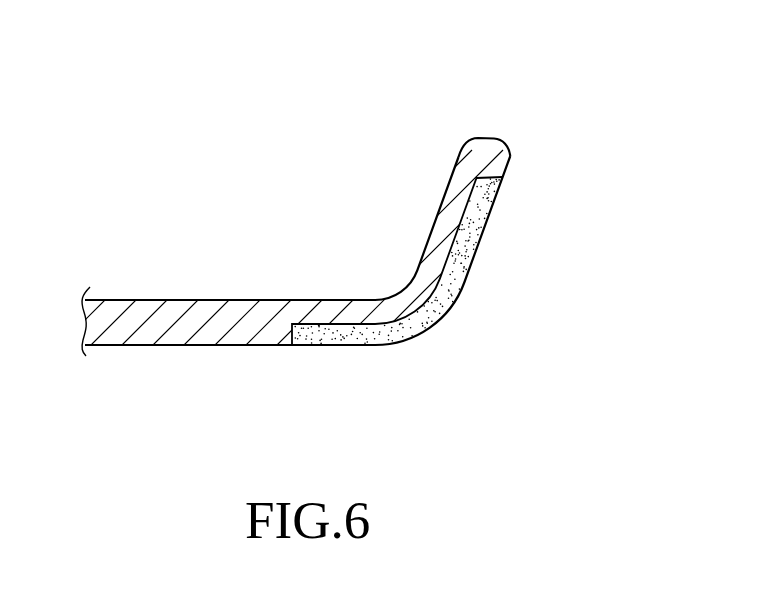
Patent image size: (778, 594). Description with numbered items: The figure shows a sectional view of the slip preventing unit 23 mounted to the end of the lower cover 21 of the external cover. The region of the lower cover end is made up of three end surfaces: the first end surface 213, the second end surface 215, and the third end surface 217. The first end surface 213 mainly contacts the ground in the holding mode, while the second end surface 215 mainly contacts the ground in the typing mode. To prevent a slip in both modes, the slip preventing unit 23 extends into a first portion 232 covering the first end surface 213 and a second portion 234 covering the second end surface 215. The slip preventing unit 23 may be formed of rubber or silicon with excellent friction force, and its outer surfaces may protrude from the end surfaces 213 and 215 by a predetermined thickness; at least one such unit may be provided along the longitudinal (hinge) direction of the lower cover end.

The lower cover 21 is at (177, 313).
The second end surface 215 is at (229, 347).
The first end surface 213 is at (512, 164).
The third end surface 217 is at (489, 138).
The slip preventing unit 23 is at (438, 333).
The first portion 232 is at (467, 243).
The second portion 234 is at (357, 338).